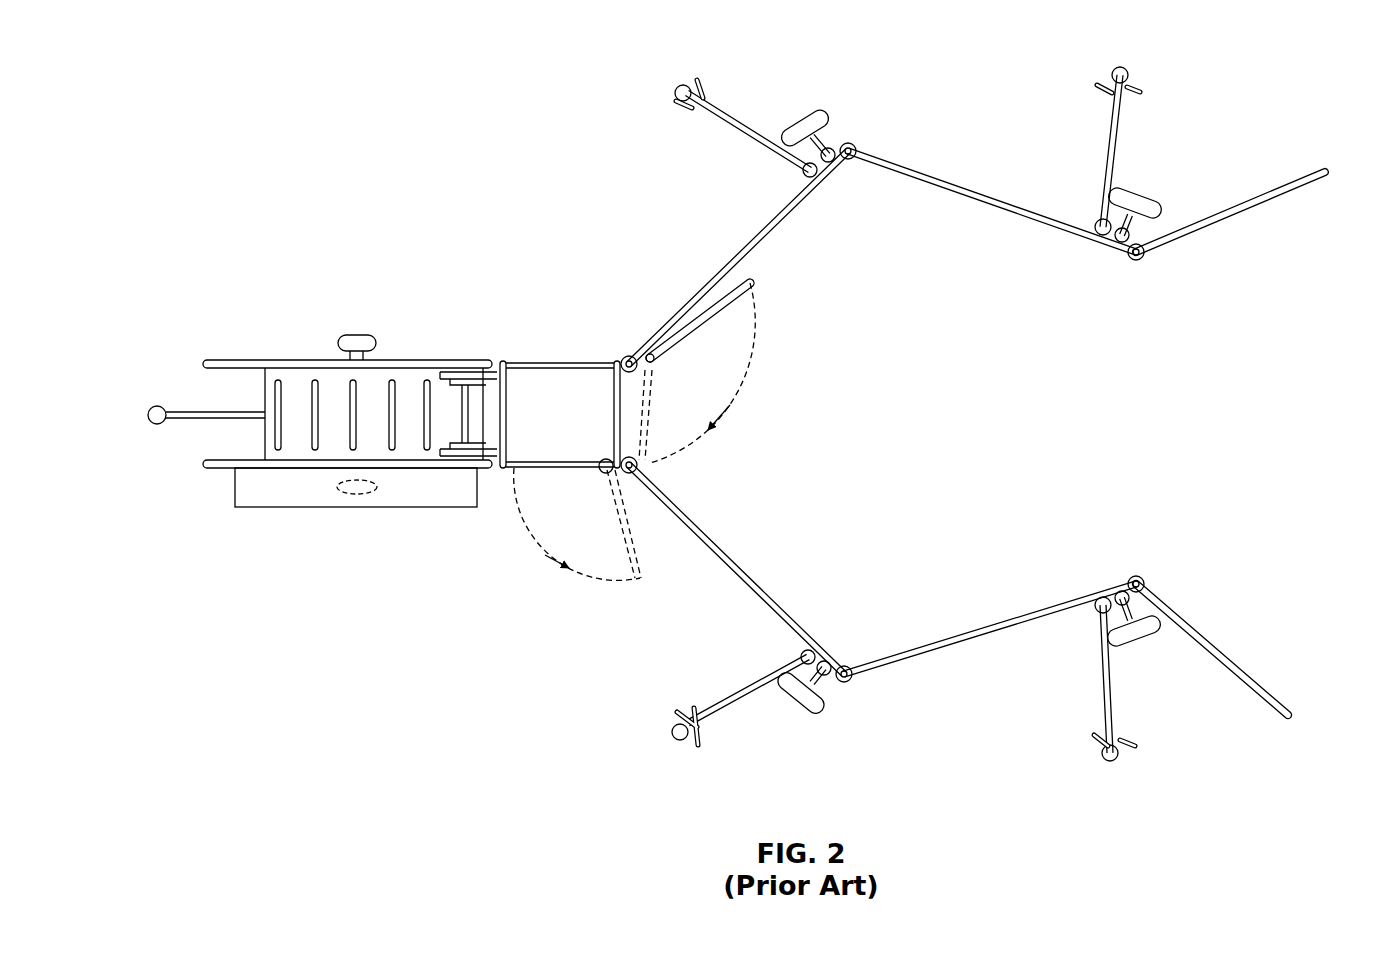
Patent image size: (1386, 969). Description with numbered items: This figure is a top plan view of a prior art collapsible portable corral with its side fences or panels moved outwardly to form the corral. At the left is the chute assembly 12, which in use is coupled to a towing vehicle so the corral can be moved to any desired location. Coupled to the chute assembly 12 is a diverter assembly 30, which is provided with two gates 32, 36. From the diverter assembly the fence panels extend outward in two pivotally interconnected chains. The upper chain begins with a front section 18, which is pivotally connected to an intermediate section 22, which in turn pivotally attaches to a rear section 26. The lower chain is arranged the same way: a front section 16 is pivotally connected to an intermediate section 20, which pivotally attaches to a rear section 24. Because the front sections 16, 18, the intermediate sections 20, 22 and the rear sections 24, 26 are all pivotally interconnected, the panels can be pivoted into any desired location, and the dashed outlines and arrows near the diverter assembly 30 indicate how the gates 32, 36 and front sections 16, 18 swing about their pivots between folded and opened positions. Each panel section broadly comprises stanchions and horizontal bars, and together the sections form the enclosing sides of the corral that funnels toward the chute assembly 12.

The chute assembly 12 is at (407, 351).
The diverter assembly 30 is at (568, 411).
The gate 36 is at (558, 470).
The gate 32 is at (688, 335).
The front section 18 is at (726, 250).
The intermediate section 22 is at (972, 211).
The rear section 26 is at (1242, 213).
The front section 16 is at (735, 580).
The intermediate section 20 is at (951, 655).
The rear section 24 is at (1232, 674).